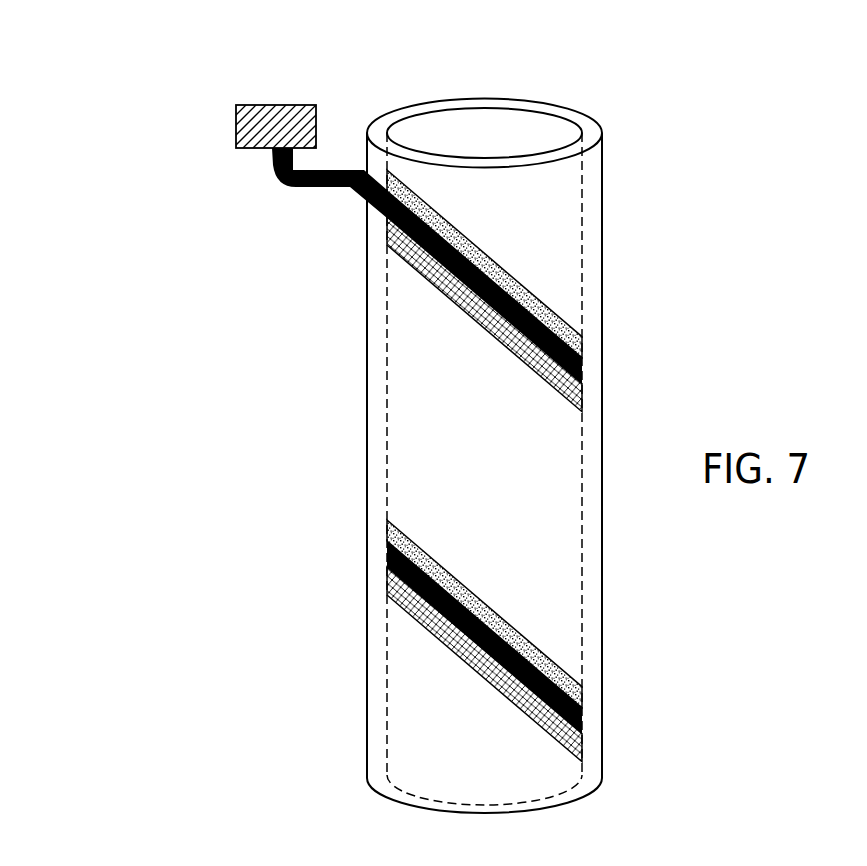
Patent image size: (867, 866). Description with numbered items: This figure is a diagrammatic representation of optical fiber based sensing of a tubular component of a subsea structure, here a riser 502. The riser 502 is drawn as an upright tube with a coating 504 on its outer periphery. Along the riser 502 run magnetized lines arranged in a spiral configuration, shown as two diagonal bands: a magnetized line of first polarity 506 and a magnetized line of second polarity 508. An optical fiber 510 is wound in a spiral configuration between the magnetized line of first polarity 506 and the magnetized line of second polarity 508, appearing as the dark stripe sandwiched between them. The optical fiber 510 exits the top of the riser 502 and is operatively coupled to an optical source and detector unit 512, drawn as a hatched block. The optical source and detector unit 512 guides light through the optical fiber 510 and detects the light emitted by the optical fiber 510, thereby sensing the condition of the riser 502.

The riser 502 is at (490, 108).
The coating 504 is at (602, 219).
The magnetized line of first polarity 506 is at (542, 371).
The magnetized line of second polarity 508 is at (556, 313).
The optical fiber 510 is at (303, 192).
The optical source and detector unit 512 is at (277, 103).